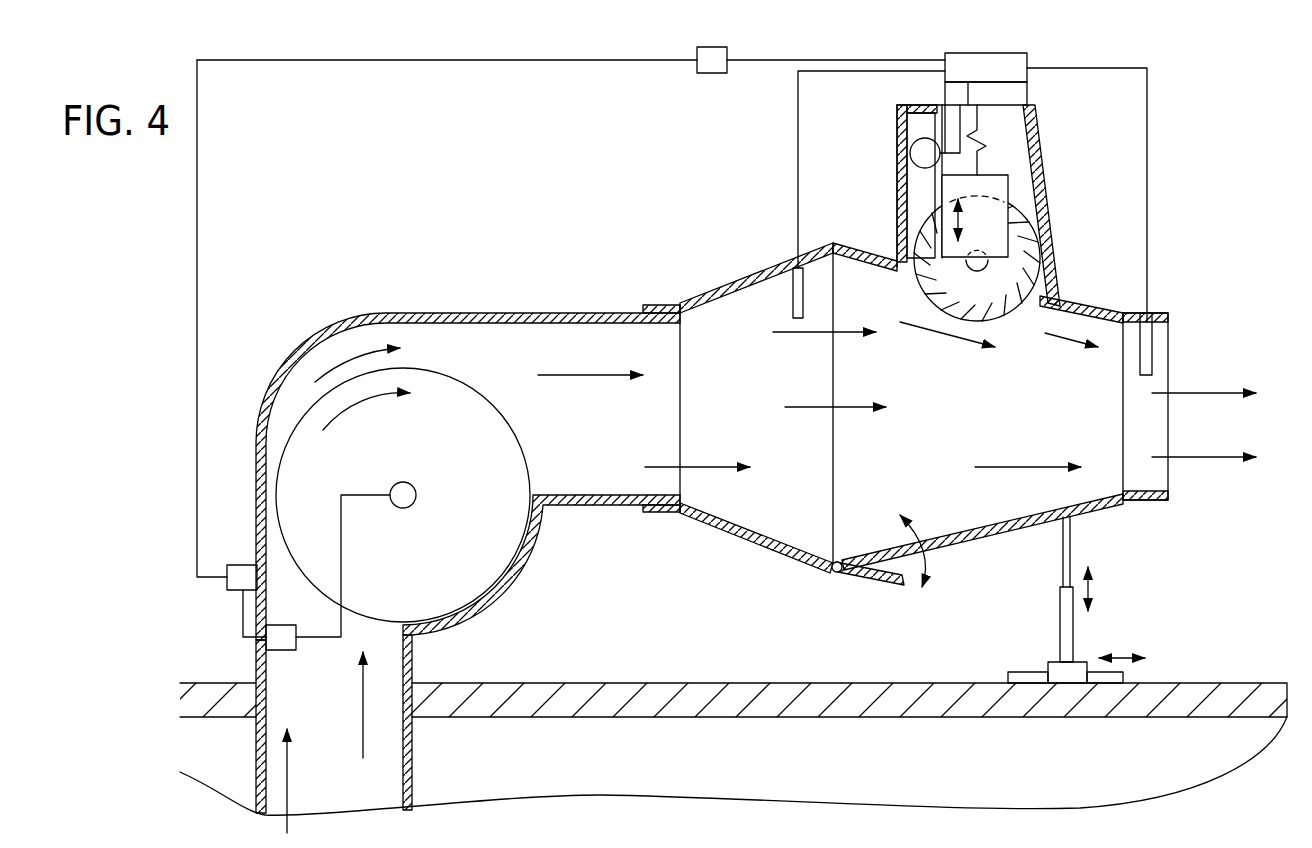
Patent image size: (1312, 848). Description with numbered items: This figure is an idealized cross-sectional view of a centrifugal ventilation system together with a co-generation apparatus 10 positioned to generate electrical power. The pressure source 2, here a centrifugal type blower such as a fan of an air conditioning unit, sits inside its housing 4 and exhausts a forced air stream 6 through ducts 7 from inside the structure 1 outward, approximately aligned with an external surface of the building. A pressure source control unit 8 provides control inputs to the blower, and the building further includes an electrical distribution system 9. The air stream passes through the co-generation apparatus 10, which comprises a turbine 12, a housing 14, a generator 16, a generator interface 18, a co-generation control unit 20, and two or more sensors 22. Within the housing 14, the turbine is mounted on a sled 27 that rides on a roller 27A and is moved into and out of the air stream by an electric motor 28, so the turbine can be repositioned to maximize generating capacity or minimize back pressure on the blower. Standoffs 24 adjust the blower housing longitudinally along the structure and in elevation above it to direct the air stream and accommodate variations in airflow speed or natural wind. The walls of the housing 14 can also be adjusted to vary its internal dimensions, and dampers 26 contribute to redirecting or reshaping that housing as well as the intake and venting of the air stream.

The structure 1 is at (573, 762).
The pressure source 2 is at (412, 464).
The housing 4 is at (485, 312).
The air stream 6 is at (583, 377).
The ducts 7 is at (255, 755).
The pressure source control unit 8 is at (242, 563).
The electrical distribution system 9 is at (712, 73).
The co-generation apparatus 10 is at (1193, 108).
The turbine 12 is at (1023, 205).
The housing 14 is at (987, 537).
The generator 16 is at (988, 173).
The generator interface 18 is at (1027, 95).
The co-generation control unit 20 is at (1013, 53).
The sensors 22 is at (280, 653).
The standoffs 24 is at (1075, 630).
The dampers 26 is at (862, 580).
The sled 27 is at (940, 198).
The roller 27A is at (910, 162).
The motor 28 is at (943, 89).